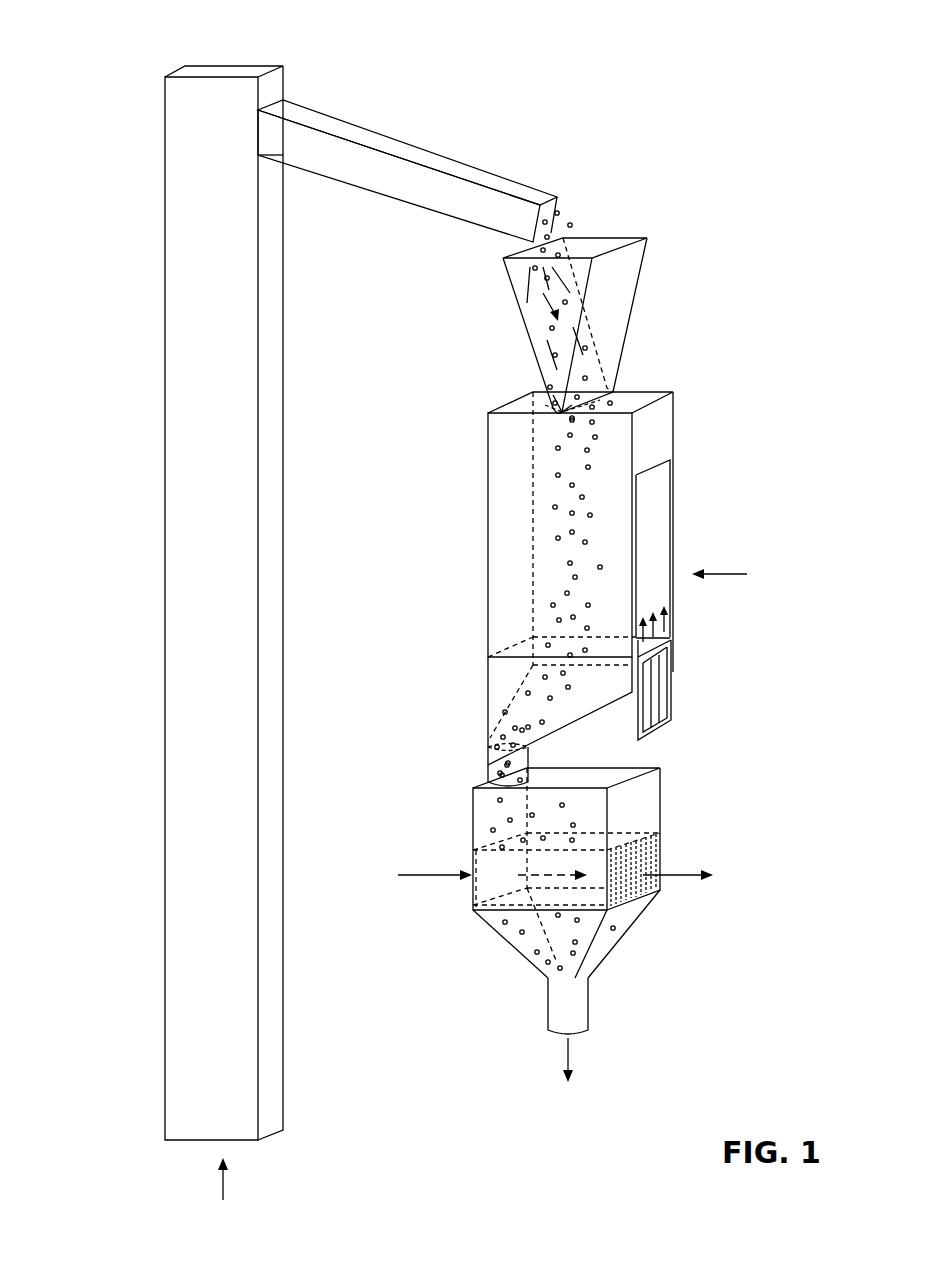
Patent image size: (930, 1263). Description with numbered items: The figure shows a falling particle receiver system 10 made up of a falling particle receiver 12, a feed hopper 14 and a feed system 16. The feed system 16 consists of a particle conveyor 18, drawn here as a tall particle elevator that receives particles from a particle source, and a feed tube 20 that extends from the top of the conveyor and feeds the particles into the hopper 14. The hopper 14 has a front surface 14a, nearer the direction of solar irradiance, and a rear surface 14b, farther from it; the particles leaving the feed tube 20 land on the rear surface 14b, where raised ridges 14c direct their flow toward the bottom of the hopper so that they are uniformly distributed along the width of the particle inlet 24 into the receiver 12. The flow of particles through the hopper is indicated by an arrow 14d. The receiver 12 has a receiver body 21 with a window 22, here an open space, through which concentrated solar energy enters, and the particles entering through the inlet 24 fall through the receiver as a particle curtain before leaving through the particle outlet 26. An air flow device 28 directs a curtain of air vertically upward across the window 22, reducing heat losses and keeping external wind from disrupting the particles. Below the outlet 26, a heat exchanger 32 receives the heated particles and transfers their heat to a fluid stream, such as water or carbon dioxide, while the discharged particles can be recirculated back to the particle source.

The falling particle receiver system 10 is at (120, 58).
The falling particle receiver 12 is at (677, 403).
The feed hopper 14 is at (643, 238).
The front surface 14a is at (640, 287).
The rear surface 14b is at (505, 278).
The raised ridges 14c is at (553, 367).
The hopper flow direction 14d is at (550, 303).
The feed system 16 is at (356, 95).
The particle conveyor 18 is at (165, 265).
The feed tube 20 is at (445, 165).
The receiver body 21 is at (488, 413).
The window 22 is at (667, 510).
The particle inlet 24 is at (623, 393).
The particle outlet 26 is at (528, 760).
The air flow device 28 is at (672, 698).
The heat exchanger 32 is at (662, 813).